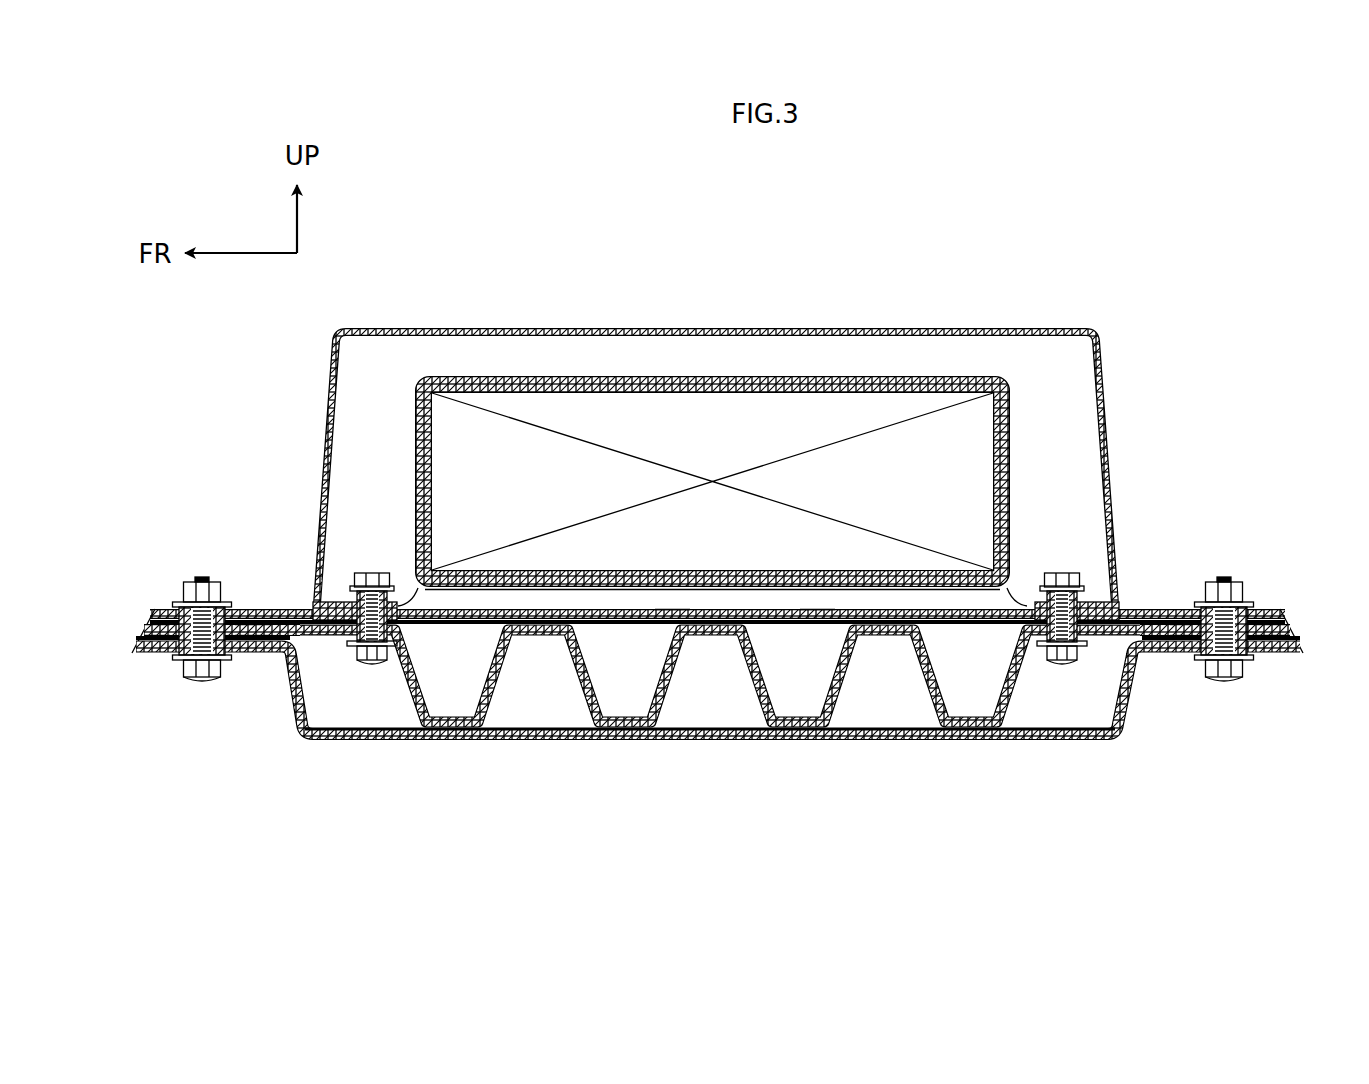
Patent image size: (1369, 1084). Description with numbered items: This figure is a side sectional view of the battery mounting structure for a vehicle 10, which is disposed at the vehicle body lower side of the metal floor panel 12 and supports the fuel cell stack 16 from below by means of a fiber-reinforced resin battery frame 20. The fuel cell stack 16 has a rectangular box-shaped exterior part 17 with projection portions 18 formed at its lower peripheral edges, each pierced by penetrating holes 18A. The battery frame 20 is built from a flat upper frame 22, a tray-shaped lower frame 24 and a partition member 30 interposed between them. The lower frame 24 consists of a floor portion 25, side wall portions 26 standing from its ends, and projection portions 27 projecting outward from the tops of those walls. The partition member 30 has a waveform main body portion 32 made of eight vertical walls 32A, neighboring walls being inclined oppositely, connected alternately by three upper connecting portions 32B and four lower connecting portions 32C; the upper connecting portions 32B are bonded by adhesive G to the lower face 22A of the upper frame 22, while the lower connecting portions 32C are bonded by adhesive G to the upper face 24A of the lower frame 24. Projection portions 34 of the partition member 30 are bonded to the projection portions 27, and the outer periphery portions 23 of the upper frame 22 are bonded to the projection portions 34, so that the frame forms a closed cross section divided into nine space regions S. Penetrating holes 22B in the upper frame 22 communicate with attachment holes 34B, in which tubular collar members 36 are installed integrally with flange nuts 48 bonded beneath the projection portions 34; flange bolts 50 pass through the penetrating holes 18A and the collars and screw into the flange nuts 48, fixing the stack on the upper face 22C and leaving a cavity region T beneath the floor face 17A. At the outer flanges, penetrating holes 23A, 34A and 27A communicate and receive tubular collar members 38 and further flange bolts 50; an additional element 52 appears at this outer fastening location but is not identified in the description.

The battery mounting structure for a vehicle 10 is at (1148, 822).
The floor panel 12 is at (740, 327).
The fuel cell stack 16 is at (866, 374).
The exterior part 17 is at (725, 391).
The floor face 17A is at (963, 570).
The projection portions 18 is at (322, 553).
The penetrating holes 18A is at (338, 600).
The battery frame 20 is at (713, 758).
The upper frame 22 is at (630, 600).
The lower face 22A is at (670, 612).
The penetrating holes 22B is at (404, 600).
The upper face 22C is at (817, 607).
The outer periphery portions 23 is at (152, 614).
The penetrating holes 23A is at (154, 610).
The lower frame 24 is at (860, 748).
The upper face 24A is at (936, 741).
The floor portion 25 is at (553, 740).
The side wall portions 26 is at (290, 692).
The projection portions 27 is at (134, 652).
The penetrating holes 27A is at (178, 655).
The partition member 30 is at (1075, 723).
The main body portion 32 is at (720, 683).
The vertical walls 32A is at (741, 642).
The upper connecting portions 32B is at (512, 628).
The lower connecting portions 32C is at (452, 729).
The projection portions 34 is at (146, 629).
The penetrating holes 34A is at (220, 660).
The attachment holes 34B is at (318, 637).
The collar members 36 is at (348, 593).
The collar members 38 is at (216, 602).
The flange nuts 48 is at (362, 661).
The flange bolts 50 is at (203, 680).
The outer upper nut 52 is at (201, 578).
The adhesive G is at (147, 620).
The space regions S is at (545, 690).
The cavity region T is at (583, 596).